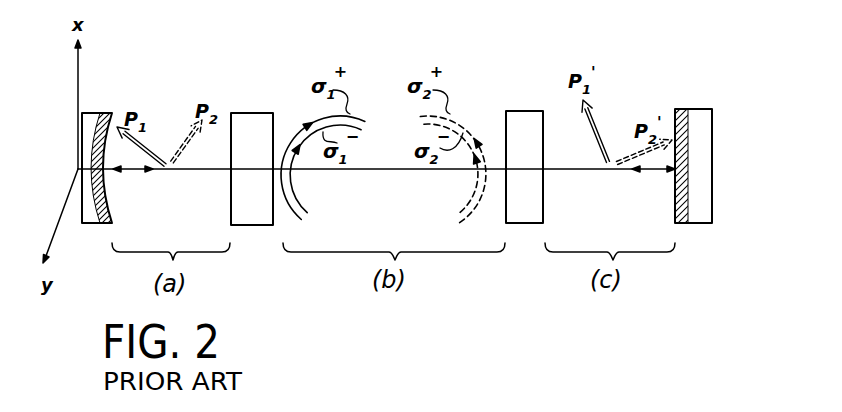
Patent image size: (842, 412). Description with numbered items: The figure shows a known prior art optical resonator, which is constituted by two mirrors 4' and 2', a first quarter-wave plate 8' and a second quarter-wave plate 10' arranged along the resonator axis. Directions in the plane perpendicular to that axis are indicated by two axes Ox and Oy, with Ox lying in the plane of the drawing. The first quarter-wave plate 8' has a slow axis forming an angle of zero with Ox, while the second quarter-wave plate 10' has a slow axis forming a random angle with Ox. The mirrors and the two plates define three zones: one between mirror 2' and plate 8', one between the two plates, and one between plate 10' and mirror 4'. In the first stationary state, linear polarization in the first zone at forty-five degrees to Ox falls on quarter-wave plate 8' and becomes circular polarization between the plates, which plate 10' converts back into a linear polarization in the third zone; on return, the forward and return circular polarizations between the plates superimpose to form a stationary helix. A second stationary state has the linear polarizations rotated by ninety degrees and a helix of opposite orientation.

The mirror 2' is at (101, 152).
The first quarter-wave plate 8' is at (252, 138).
The second quarter-wave plate 10' is at (515, 136).
The mirror 4' is at (694, 138).